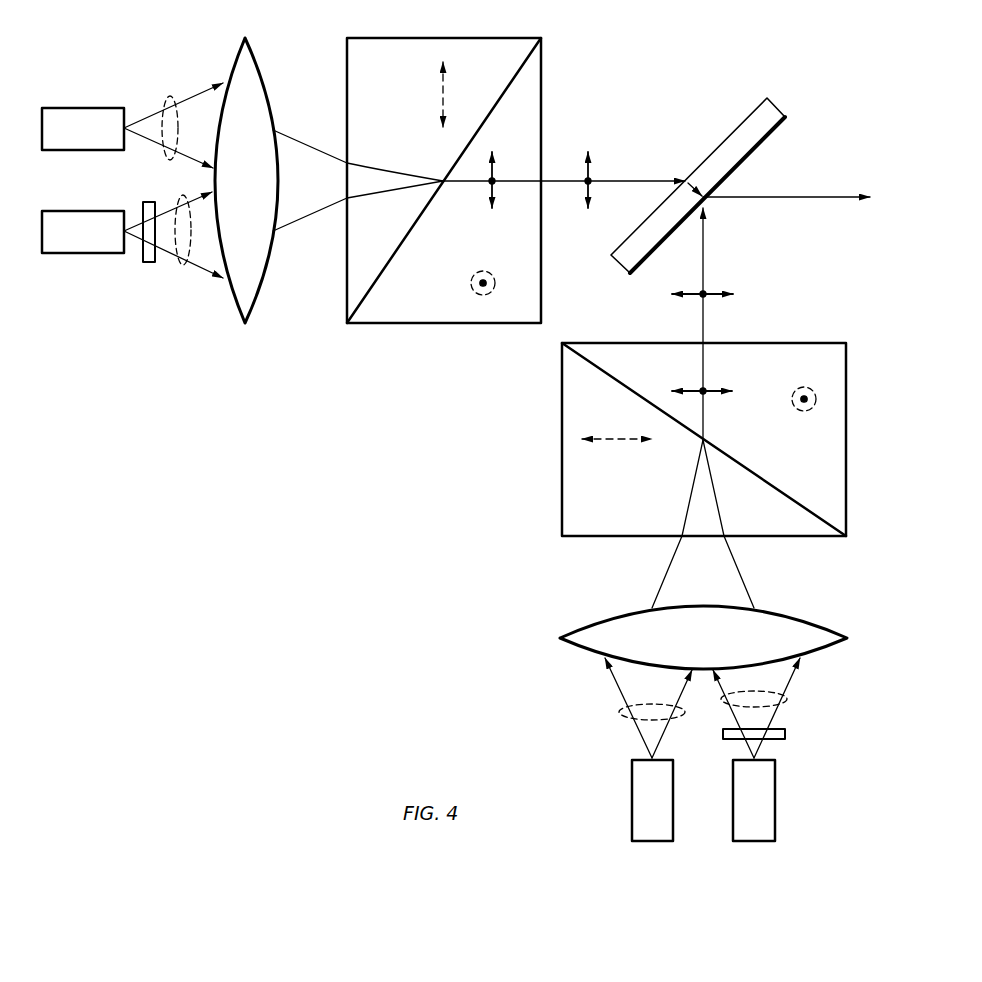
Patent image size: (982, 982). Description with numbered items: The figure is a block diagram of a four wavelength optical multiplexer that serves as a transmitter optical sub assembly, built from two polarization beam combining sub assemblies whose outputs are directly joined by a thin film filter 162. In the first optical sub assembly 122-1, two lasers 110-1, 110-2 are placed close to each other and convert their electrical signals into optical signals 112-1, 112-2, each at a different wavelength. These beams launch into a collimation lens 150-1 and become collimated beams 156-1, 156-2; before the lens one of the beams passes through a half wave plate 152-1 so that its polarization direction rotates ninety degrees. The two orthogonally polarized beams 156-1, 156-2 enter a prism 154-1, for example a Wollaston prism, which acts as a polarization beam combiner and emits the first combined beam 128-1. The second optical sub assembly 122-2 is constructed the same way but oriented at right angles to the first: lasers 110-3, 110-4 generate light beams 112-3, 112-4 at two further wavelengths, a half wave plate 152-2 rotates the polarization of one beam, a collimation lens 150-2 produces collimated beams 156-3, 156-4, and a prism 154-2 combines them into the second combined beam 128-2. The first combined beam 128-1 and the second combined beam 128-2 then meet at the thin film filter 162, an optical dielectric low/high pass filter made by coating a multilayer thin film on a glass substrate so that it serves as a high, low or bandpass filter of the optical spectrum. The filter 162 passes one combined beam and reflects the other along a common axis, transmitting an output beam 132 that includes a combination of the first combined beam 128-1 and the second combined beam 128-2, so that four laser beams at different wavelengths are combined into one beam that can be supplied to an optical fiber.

The laser 110-1 is at (82, 108).
The laser 110-2 is at (82, 253).
The laser 110-3 is at (632, 798).
The laser 110-4 is at (775, 798).
The optical signal 112-1 is at (167, 97).
The optical signal 112-2 is at (182, 265).
The optical signal 112-3 is at (620, 713).
The optical signal 112-4 is at (787, 697).
The first optical sub assembly 122-1 is at (300, 348).
The second optical sub assembly 122-2 is at (487, 543).
The first combined beam 128-1 is at (637, 177).
The second combined beam 128-2 is at (705, 255).
The output beam 132 is at (797, 195).
The collimation lens 150-1 is at (236, 62).
The collimation lens 150-2 is at (592, 623).
The half wave plate 152-1 is at (149, 202).
The half wave plate 152-2 is at (787, 735).
The prism 154-1 is at (543, 104).
The prism 154-2 is at (562, 408).
The collimated beam 156-1 is at (313, 147).
The collimated beam 156-2 is at (313, 220).
The collimated beam 156-3 is at (667, 572).
The collimated beam 156-4 is at (738, 572).
The thin film filter 162 is at (727, 138).